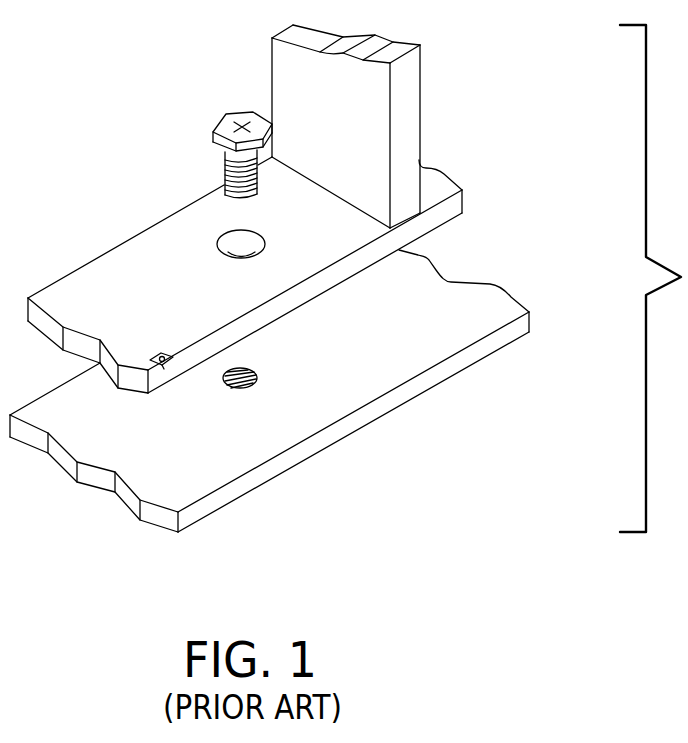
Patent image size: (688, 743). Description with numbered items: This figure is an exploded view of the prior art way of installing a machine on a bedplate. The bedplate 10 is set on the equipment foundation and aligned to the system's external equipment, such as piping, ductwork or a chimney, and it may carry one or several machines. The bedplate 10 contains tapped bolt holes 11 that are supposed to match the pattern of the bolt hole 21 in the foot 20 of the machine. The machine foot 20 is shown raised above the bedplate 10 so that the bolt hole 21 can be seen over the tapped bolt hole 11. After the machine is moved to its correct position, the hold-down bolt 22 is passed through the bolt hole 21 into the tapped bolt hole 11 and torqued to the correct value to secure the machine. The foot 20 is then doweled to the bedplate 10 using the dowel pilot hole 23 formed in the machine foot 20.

The bedplate 10 is at (484, 280).
The tapped bolt hole 11 is at (247, 368).
The machine foot 20 is at (444, 164).
The bolt hole 21 is at (230, 233).
The hold-down bolt 22 is at (222, 110).
The dowel pilot hole 23 is at (153, 355).